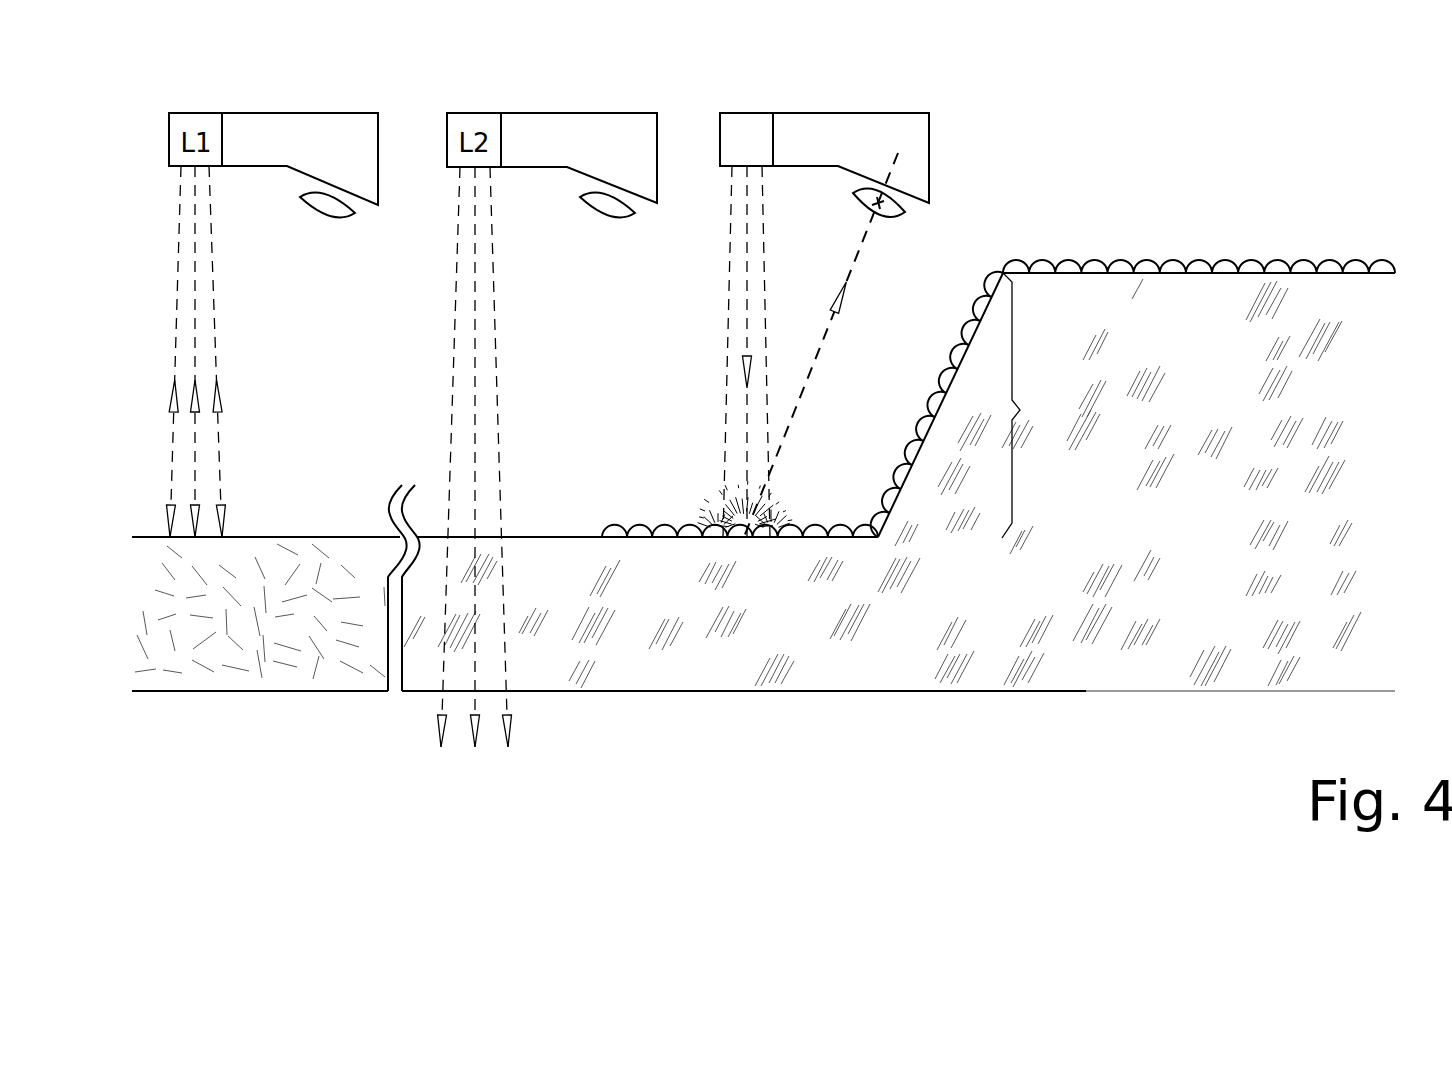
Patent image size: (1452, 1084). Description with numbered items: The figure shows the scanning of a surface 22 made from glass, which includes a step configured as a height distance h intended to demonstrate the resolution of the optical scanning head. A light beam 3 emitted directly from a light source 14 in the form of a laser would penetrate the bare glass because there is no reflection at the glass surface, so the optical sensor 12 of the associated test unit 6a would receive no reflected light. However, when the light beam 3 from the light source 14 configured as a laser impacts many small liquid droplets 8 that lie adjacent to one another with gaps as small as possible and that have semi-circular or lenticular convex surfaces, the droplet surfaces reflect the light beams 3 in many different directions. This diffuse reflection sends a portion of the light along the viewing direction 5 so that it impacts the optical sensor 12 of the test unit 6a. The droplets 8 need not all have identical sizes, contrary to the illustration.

The light beam 3 is at (196, 346).
The viewing direction 5 is at (826, 336).
The test unit 6a is at (907, 100).
The liquid droplets 8 is at (641, 527).
The optical sensor 12 is at (906, 195).
The light source 14 is at (720, 133).
The surface 22 is at (432, 537).
The height distance h is at (1021, 405).